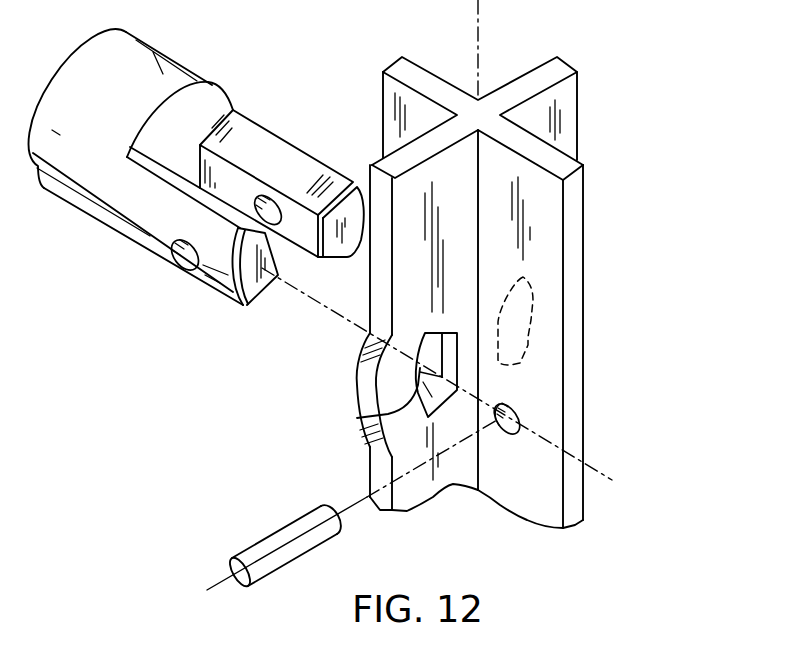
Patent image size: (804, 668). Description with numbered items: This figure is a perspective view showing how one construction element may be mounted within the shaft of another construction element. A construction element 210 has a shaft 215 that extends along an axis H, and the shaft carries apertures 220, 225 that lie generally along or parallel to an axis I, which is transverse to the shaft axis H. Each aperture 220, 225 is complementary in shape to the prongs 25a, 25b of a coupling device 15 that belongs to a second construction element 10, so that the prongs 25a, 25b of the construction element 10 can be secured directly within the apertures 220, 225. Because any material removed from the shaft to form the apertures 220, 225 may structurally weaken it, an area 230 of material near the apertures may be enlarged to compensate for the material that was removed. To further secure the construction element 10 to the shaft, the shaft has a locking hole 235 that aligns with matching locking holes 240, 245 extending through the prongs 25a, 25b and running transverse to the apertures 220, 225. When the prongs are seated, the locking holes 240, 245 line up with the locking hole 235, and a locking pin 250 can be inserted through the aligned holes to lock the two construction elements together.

The construction element 10 is at (238, 19).
The coupling device 15 is at (242, 92).
The prong 25a is at (254, 138).
The prong 25b is at (150, 213).
The locking hole 240 is at (182, 268).
The locking hole 245 is at (262, 200).
The construction element 210 is at (578, 110).
The shaft 215 is at (487, 115).
The aperture 220 is at (357, 418).
The aperture 225 is at (528, 338).
The enlarged area of material 230 is at (383, 377).
The locking hole 235 is at (507, 433).
The locking pin 250 is at (275, 533).
The shaft axis H is at (479, 35).
The aperture axis I is at (327, 313).